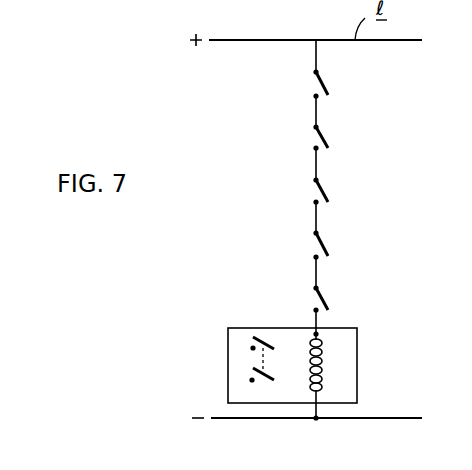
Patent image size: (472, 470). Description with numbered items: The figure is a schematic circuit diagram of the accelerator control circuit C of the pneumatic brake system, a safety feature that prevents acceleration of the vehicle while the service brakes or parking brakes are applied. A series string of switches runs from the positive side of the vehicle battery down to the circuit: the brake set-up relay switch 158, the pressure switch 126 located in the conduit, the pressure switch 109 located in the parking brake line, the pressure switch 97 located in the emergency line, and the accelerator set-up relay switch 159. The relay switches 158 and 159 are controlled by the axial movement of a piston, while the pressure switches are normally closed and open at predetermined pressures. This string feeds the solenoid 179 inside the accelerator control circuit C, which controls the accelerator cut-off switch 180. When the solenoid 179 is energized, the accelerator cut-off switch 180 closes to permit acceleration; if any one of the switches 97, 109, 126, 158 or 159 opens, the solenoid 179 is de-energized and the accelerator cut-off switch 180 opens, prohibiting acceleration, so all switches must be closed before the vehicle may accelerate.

The brake set-up relay switch 158 is at (322, 80).
The pressure switch 126 is at (322, 137).
The pressure switch 109 is at (322, 190).
The pressure switch 97 is at (322, 243).
The accelerator set-up relay switch 159 is at (323, 298).
The solenoid 179 is at (322, 362).
The accelerator cut-off switch 180 is at (268, 338).
The accelerator control circuit C is at (282, 396).